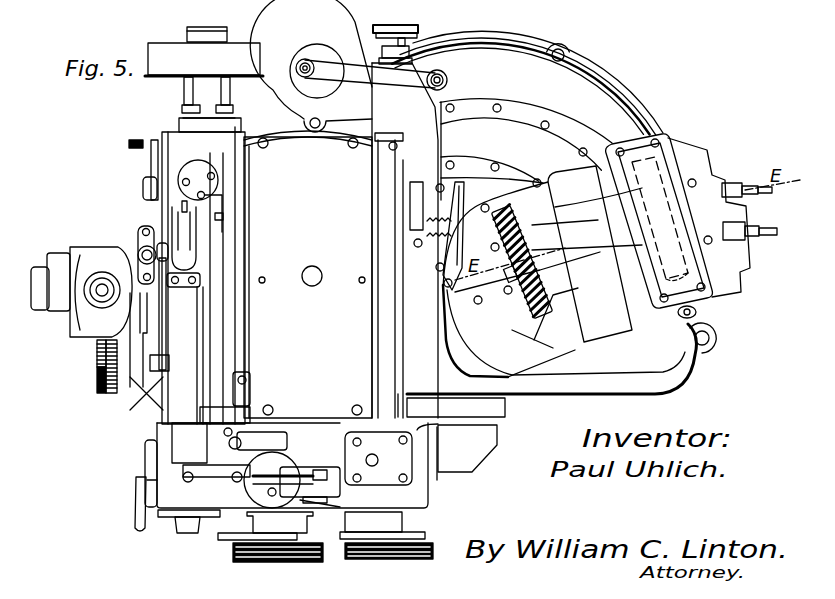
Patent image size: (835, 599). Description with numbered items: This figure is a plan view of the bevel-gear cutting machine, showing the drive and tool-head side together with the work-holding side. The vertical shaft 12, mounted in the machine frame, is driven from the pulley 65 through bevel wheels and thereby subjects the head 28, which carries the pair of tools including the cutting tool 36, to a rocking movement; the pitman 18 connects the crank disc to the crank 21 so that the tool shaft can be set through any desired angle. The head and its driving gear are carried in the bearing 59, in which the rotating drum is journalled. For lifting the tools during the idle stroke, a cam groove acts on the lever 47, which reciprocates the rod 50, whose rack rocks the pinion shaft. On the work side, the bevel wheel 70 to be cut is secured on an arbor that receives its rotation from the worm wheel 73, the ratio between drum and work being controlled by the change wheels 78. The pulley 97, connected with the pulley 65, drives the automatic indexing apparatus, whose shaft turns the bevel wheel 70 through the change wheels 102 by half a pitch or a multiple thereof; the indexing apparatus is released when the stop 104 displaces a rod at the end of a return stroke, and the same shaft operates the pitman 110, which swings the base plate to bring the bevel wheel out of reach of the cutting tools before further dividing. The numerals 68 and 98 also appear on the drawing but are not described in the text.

The vertical shaft 12 is at (93, 283).
The pitman 18 is at (162, 298).
The crank 21 is at (172, 239).
The head 28 is at (412, 272).
The cutting tool 36 is at (462, 192).
The lever 47 is at (140, 235).
The rod 50 is at (452, 276).
The bearing 59 is at (308, 274).
The pulley 65 is at (204, 59).
The ratchet 68 is at (97, 372).
The bevel wheel 70 is at (514, 300).
The worm wheel 73 is at (667, 147).
The change wheels 78 is at (232, 553).
The pulley 97 is at (200, 36).
The cap 98 is at (420, 27).
The change wheels 102 is at (433, 552).
The stop 104 is at (258, 392).
The pitman 110 is at (337, 72).